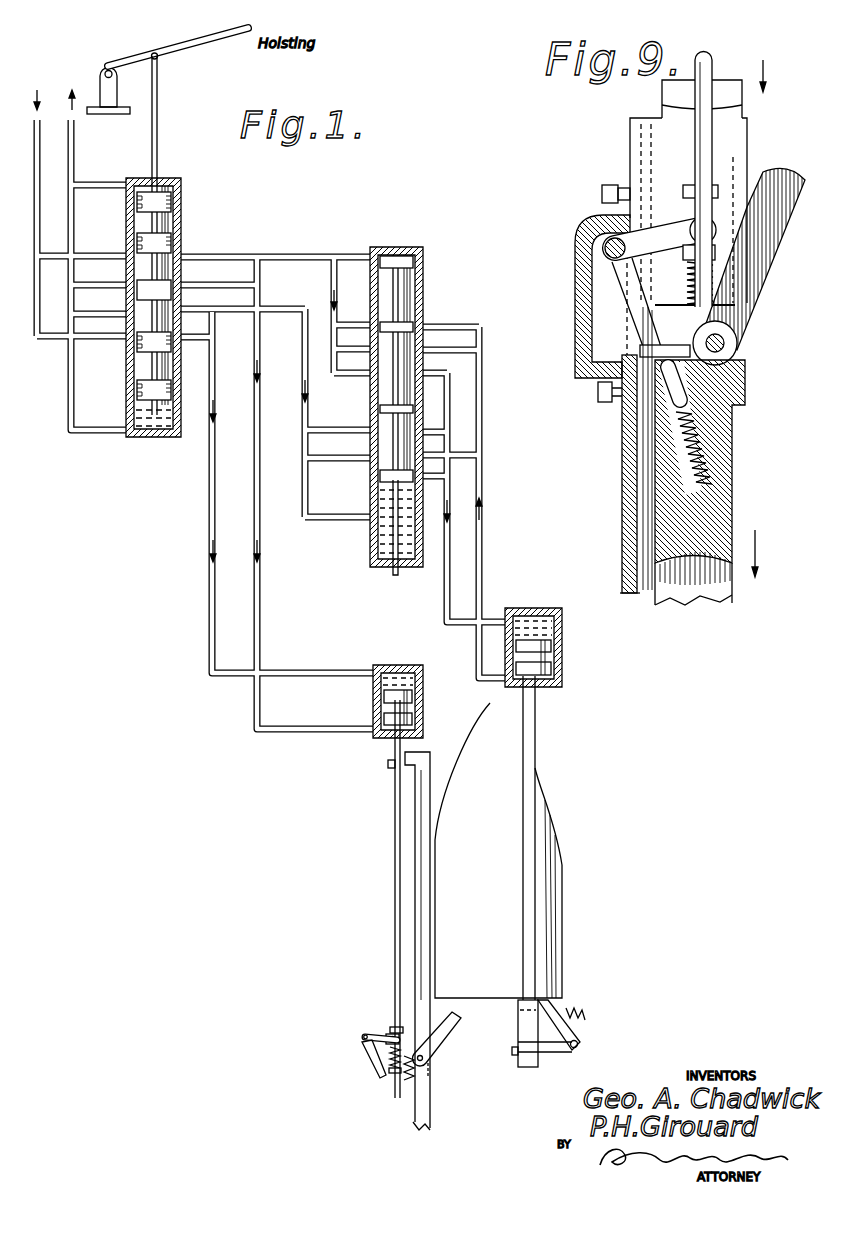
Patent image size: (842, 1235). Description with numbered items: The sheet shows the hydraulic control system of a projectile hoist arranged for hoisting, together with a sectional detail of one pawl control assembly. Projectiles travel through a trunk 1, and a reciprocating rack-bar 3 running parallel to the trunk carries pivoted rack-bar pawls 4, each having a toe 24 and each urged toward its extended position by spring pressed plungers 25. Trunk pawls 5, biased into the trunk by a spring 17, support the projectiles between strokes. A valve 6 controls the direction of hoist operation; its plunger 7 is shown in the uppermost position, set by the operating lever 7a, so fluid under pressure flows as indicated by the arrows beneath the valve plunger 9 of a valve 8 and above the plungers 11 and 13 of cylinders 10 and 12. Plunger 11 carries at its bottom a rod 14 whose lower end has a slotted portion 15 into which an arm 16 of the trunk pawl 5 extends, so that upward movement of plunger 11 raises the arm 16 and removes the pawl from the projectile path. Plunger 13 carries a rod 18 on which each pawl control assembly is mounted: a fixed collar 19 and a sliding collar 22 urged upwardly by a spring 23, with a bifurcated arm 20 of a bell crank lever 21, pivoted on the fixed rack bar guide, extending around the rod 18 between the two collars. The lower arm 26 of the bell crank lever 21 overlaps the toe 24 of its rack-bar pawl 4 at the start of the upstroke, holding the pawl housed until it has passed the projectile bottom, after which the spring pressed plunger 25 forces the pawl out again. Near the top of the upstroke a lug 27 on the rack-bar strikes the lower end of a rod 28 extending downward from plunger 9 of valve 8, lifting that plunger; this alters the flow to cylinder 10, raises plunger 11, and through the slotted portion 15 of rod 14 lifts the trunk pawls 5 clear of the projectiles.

In FIG. 9, the trunk 1 is at (622, 497).
In FIG. 1, the rack-bar 3 is at (420, 843).
In FIG. 9, the rack-bar 3 is at (730, 467).
In FIG. 1, the rack-bar pawl 4 is at (440, 1038).
In FIG. 9, the rack-bar pawl 4 is at (768, 285).
In FIG. 1, the trunk pawl 5 is at (554, 1013).
In FIG. 1, the valve 6 is at (182, 236).
In FIG. 1, the plunger 7 is at (165, 202).
In FIG. 1, the operating lever 7a is at (209, 44).
In FIG. 1, the valve 8 is at (425, 307).
In FIG. 1, the valve plunger 9 is at (404, 289).
In FIG. 1, the cylinder 10 is at (560, 650).
In FIG. 1, the plunger 11 is at (563, 666).
In FIG. 1, the cylinder 12 is at (424, 698).
In FIG. 1, the plunger 13 is at (424, 709).
In FIG. 1, the rod 14 is at (536, 724).
In FIG. 1, the slotted portion 15 is at (522, 1064).
In FIG. 1, the arm 16 is at (548, 1055).
In FIG. 1, the spring 17 is at (584, 1018).
In FIG. 1, the rod 18 is at (394, 921).
In FIG. 9, the rod 18 is at (712, 66).
In FIG. 1, the fixed collar 19 is at (392, 1029).
In FIG. 9, the fixed collar 19 is at (703, 188).
In FIG. 1, the bifurcated arm 20 is at (388, 1036).
In FIG. 9, the bifurcated arm 20 is at (676, 216).
In FIG. 1, the bell crank lever 21 is at (356, 1043).
In FIG. 9, the bell crank lever 21 is at (590, 248).
In FIG. 9, the sliding collar 22 is at (693, 257).
In FIG. 9, the spring 23 is at (717, 271).
In FIG. 9, the toe 24 is at (601, 391).
In FIG. 9, the spring pressed plunger 25 is at (667, 386).
In FIG. 1, the lower arm 26 is at (376, 1060).
In FIG. 9, the lower arm 26 is at (613, 313).
In FIG. 1, the lug 27 is at (388, 765).
In FIG. 1, the rod 28 is at (390, 568).